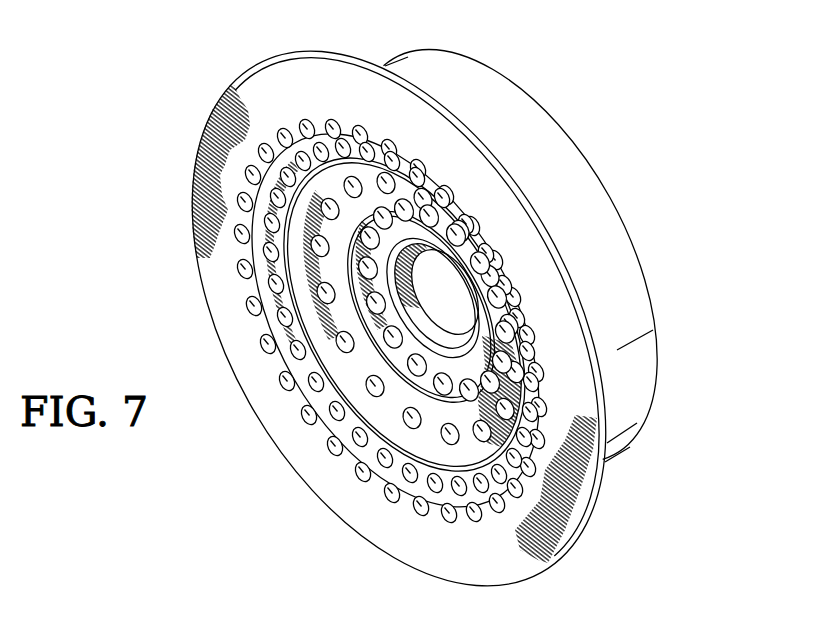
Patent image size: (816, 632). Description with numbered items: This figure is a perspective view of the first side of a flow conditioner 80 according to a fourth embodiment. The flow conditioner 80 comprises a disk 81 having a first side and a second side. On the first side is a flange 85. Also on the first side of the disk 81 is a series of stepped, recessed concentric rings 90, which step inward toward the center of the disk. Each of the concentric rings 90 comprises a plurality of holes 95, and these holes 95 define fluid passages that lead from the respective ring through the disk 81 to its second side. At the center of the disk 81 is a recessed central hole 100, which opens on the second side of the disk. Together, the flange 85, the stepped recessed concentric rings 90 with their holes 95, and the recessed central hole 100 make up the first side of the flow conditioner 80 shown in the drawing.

The flow conditioner 80 is at (572, 84).
The disk 81 is at (640, 290).
The flange 85 is at (598, 400).
The stepped, recessed concentric rings 90 is at (433, 433).
The holes 95 is at (283, 134).
The recessed central hole 100 is at (435, 285).